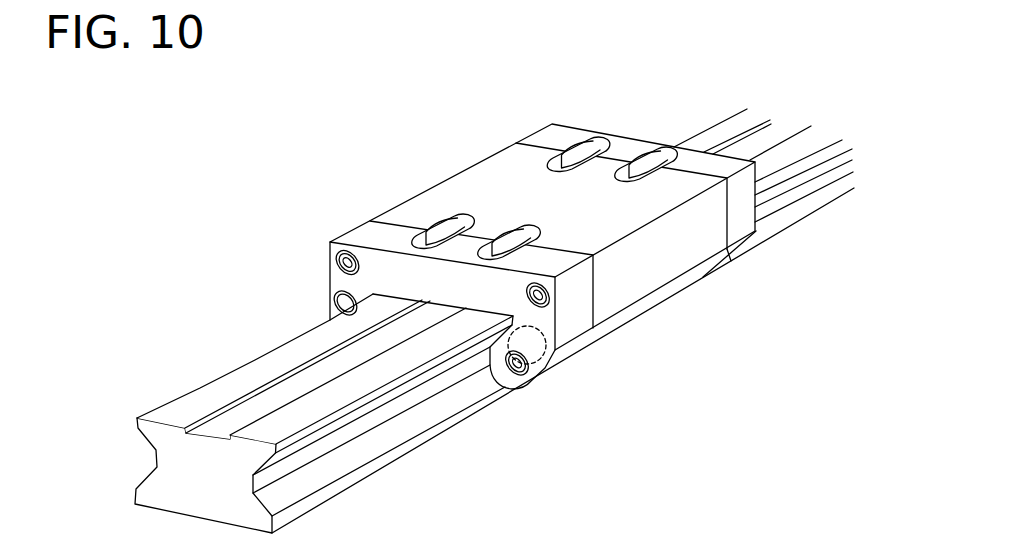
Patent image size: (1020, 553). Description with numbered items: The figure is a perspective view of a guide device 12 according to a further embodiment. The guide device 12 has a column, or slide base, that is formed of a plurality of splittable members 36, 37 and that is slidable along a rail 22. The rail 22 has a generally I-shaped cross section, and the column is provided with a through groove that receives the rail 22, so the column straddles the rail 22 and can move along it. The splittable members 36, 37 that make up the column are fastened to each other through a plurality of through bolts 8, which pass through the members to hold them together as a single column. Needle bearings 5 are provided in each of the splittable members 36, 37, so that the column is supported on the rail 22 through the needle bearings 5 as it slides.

The guide device 12 is at (460, 110).
The rail 22 is at (166, 384).
The splittable member 36 is at (543, 137).
The splittable member 37 is at (408, 212).
The needle bearing 5 is at (518, 230).
The through bolt 8 is at (519, 390).